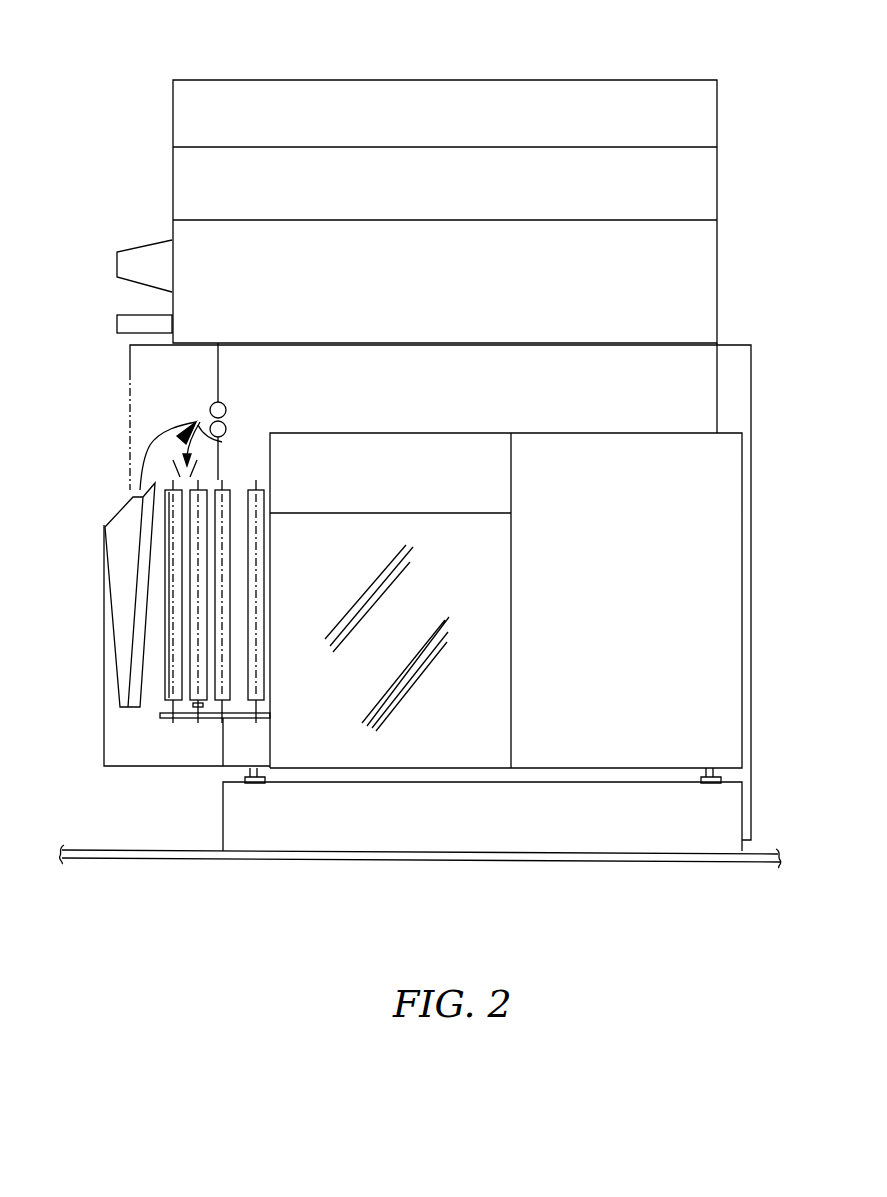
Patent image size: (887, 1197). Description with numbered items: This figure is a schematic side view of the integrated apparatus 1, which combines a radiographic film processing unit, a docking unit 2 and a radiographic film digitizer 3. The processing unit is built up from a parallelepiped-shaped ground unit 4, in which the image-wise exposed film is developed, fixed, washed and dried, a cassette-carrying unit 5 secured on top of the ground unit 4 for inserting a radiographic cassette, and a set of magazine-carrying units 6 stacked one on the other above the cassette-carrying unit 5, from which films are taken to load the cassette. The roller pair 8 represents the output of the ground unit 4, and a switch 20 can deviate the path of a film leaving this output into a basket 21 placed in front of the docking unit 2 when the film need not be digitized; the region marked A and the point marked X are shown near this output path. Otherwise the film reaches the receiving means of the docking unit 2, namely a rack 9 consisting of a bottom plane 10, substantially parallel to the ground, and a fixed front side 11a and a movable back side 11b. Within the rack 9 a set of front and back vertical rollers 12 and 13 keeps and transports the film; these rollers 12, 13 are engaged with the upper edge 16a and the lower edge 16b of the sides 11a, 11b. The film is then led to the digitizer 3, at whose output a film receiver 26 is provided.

The integrated apparatus 1 is at (112, 159).
The docking unit 2 is at (132, 735).
The radiographic film digitizer 3 is at (688, 495).
The ground unit 4 is at (702, 410).
The cassette-carrying unit 5 is at (667, 285).
The magazine-carrying units 6 is at (311, 163).
The roller pair 8 is at (226, 432).
The rack 9 is at (198, 720).
The bottom plane 10 is at (212, 720).
The front side 11a is at (168, 688).
The back side 11b is at (203, 650).
The front vertical rollers 12 is at (170, 590).
The back vertical rollers 13 is at (195, 638).
The upper edge 16a is at (173, 495).
The lower edge 16b is at (200, 488).
The switch 20 is at (184, 426).
The basket 21 is at (118, 537).
The film receiver 26 is at (482, 583).
The sheet stack A is at (185, 560).
The nip position X is at (222, 442).